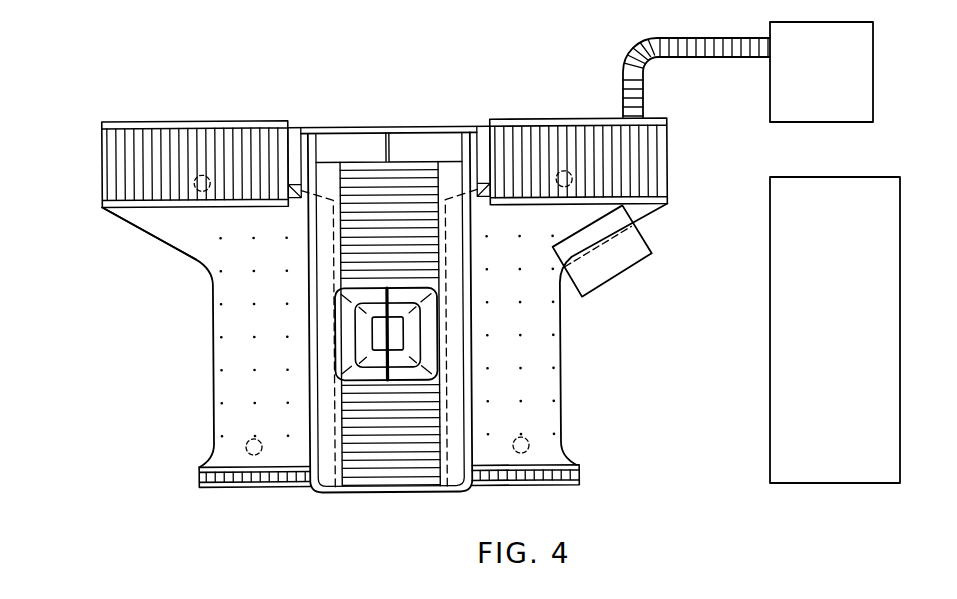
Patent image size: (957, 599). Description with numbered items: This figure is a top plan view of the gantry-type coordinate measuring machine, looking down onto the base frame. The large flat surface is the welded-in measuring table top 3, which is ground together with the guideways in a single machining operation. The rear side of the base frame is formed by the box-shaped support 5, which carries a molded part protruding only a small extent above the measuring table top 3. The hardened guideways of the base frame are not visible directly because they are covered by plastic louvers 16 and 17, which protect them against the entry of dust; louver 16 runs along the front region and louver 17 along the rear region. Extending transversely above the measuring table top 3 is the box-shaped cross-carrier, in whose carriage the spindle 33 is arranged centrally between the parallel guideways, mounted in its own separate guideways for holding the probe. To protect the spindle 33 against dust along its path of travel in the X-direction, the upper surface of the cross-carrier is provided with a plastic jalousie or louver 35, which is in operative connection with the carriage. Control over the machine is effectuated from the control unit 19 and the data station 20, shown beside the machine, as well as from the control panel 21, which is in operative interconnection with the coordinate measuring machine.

The measuring table top 3 is at (540, 387).
The box-shaped support 5 is at (168, 227).
The plastic louver 16 is at (248, 478).
The plastic louver 17 is at (233, 148).
The control unit 19 is at (850, 110).
The data station 20 is at (883, 345).
The control panel 21 is at (607, 275).
The spindle 33 is at (398, 335).
The plastic louver 35 is at (385, 198).